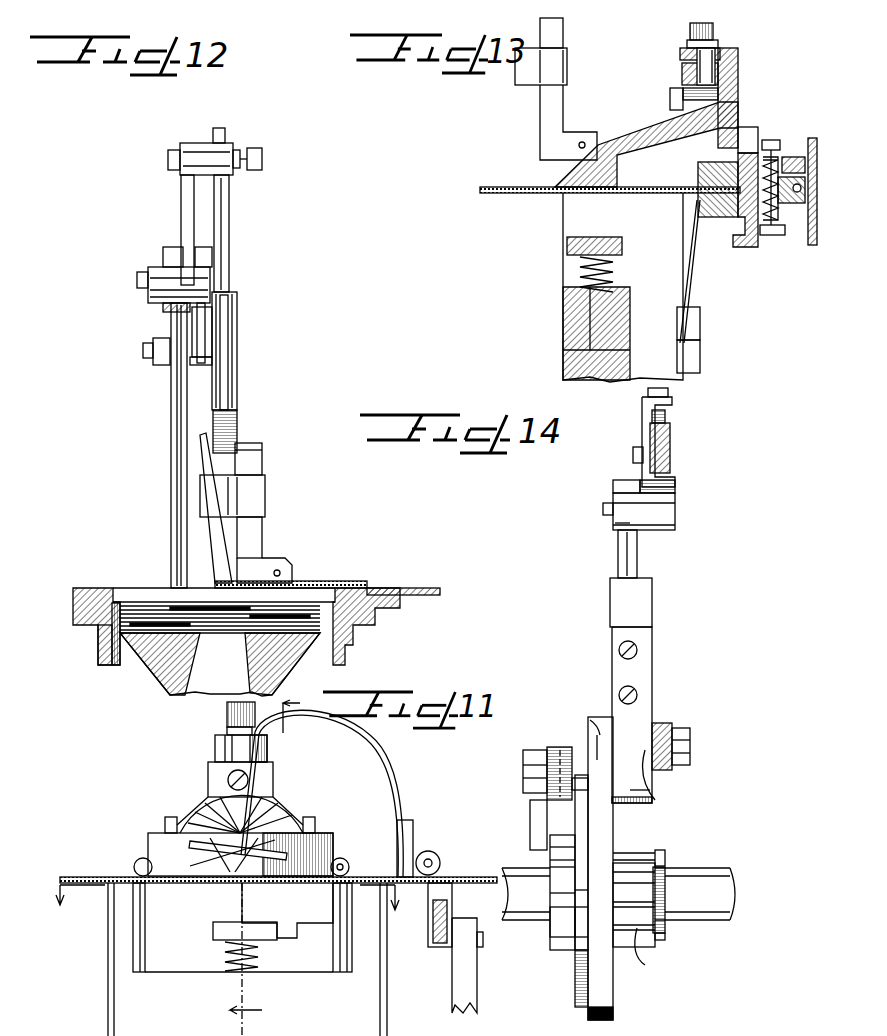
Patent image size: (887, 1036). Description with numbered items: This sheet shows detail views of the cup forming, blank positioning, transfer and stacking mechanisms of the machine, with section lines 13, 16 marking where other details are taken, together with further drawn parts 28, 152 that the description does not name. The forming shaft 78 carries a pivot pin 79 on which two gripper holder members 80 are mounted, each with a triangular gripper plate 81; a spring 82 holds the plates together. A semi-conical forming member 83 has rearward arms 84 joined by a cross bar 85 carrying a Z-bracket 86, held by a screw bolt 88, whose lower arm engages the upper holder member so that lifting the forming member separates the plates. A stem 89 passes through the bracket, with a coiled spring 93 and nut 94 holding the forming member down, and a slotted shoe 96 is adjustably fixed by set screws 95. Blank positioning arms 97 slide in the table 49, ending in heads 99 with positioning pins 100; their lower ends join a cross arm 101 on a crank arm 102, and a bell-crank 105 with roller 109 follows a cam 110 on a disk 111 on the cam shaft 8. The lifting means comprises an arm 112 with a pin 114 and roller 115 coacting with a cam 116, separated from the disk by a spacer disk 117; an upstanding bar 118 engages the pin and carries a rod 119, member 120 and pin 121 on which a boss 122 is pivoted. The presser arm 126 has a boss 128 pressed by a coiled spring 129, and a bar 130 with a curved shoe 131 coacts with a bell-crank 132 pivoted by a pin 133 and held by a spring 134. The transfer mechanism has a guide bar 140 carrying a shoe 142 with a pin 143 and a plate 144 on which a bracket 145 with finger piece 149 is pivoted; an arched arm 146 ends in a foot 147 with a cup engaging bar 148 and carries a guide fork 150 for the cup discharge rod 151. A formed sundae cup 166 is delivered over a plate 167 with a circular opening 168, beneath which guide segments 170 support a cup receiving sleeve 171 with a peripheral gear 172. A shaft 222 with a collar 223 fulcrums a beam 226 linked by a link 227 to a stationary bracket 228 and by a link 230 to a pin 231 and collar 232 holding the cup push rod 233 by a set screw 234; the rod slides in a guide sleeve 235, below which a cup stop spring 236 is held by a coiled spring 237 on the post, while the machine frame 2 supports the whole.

In FIG. 13, the machine frame 2 is at (568, 222).
In FIG. 11, the machine frame 2 is at (160, 1012).
In FIG. 14, the cam shaft 8 is at (732, 893).
In FIG. 11, the section line 13— 13 is at (278, 863).
In FIG. 11, the section line 16— 16 is at (226, 904).
In FIG. 13, the plunger block 28 is at (570, 248).
In FIG. 12, the table 49 is at (420, 588).
In FIG. 13, the table 49 is at (490, 187).
In FIG. 11, the table 49 is at (85, 877).
In FIG. 13, the forming shaft 78 is at (745, 233).
In FIG. 13, the pivot pin 79 is at (808, 240).
In FIG. 13, the gripper holder members 80 is at (790, 150).
In FIG. 13, the gripper plates 81 is at (672, 185).
In FIG. 13, the spring 82 is at (790, 225).
In FIG. 13, the forming member 83 is at (628, 140).
In FIG. 11, the forming member 83 is at (205, 808).
In FIG. 13, the arms 84 is at (685, 75).
In FIG. 14, the arms 84 is at (670, 438).
In FIG. 11, the arms 84 is at (165, 825).
In FIG. 11, the cross bar 85 is at (268, 800).
In FIG. 13, the Z-bracket 86 is at (728, 115).
In FIG. 11, the Z-bracket 86 is at (217, 748).
In FIG. 13, the screw bolt 88 is at (670, 95).
In FIG. 11, the screw bolt 88 is at (225, 780).
In FIG. 13, the stem 89 is at (690, 58).
In FIG. 13, the coiled spring 93 is at (688, 30).
In FIG. 11, the coiled spring 93 is at (227, 707).
In FIG. 13, the nut 94 is at (720, 45).
In FIG. 14, the nut 94 is at (668, 392).
In FIG. 11, the nut 94 is at (227, 730).
In FIG. 14, the set screws 95 is at (633, 455).
In FIG. 14, the slotted shoe 96 is at (644, 420).
In FIG. 13, the arms 97 is at (690, 238).
In FIG. 11, the arms 97 is at (145, 957).
In FIG. 11, the heads 99 is at (148, 850).
In FIG. 11, the positioning pins 100 is at (134, 866).
In FIG. 13, the cross arm 101 is at (700, 322).
In FIG. 13, the crank arm 102 is at (700, 352).
In FIG. 14, the bell-crank 105 is at (530, 825).
In FIG. 14, the roller 109 is at (558, 748).
In FIG. 14, the cam 110 is at (568, 893).
In FIG. 14, the disk 111 is at (560, 935).
In FIG. 14, the arm 112 is at (665, 720).
In FIG. 14, the pin 114 is at (670, 775).
In FIG. 14, the roller 115 is at (600, 720).
In FIG. 14, the cam 116 is at (597, 855).
In FIG. 14, the spacer disk 117 is at (578, 965).
In FIG. 14, the upstanding bar 118 is at (633, 598).
In FIG. 14, the rod 119 is at (620, 560).
In FIG. 14, the member 120 is at (618, 520).
In FIG. 14, the pin 121 is at (603, 510).
In FIG. 14, the boss 122 is at (677, 518).
In FIG. 11, the presser arm 126 is at (287, 910).
In FIG. 11, the boss 128 is at (222, 922).
In FIG. 13, the coiled spring 129 is at (580, 275).
In FIG. 11, the coiled spring 129 is at (230, 962).
In FIG. 14, the bar 130 is at (635, 675).
In FIG. 14, the curved shoe 131 is at (652, 800).
In FIG. 14, the bell-crank 132 is at (645, 917).
In FIG. 14, the pin 133 is at (665, 925).
In FIG. 14, the spring 134 is at (665, 865).
In FIG. 11, the guide bar 140 is at (440, 940).
In FIG. 11, the shoe 142 is at (447, 888).
In FIG. 11, the pin 143 is at (480, 948).
In FIG. 11, the plate 144 is at (428, 935).
In FIG. 11, the bracket 145 is at (425, 855).
In FIG. 12, the arched arm 146 is at (250, 463).
In FIG. 13, the arched arm 146 is at (545, 105).
In FIG. 11, the arched arm 146 is at (398, 790).
In FIG. 12, the foot 147 is at (264, 570).
In FIG. 13, the foot 147 is at (555, 148).
In FIG. 12, the cup engaging bar 148 is at (285, 573).
In FIG. 13, the cup engaging bar 148 is at (584, 141).
In FIG. 11, the cup engaging bar 148 is at (176, 894).
In FIG. 11, the finger piece 149 is at (410, 830).
In FIG. 12, the guide fork 150 is at (230, 496).
In FIG. 13, the guide fork 150 is at (525, 72).
In FIG. 11, the guide fork 150 is at (248, 775).
In FIG. 12, the cup discharge rod 151 is at (223, 283).
In FIG. 11, the tip 152 is at (455, 1000).
In FIG. 12, the sundae cup 166 is at (372, 588).
In FIG. 12, the plate 167 is at (90, 588).
In FIG. 12, the circular opening 168 is at (125, 595).
In FIG. 12, the guide segments 170 is at (370, 622).
In FIG. 12, the cup receiving sleeve 171 is at (112, 660).
In FIG. 12, the peripheral gear 172 is at (98, 640).
In FIG. 12, the shaft 222 is at (180, 419).
In FIG. 12, the collar 223 is at (175, 312).
In FIG. 12, the beam 226 is at (205, 260).
In FIG. 12, the link 227 is at (205, 322).
In FIG. 12, the stationary bracket 228 is at (238, 373).
In FIG. 12, the link 230 is at (187, 224).
In FIG. 12, the pin 231 is at (176, 168).
In FIG. 12, the collar 232 is at (233, 146).
In FIG. 12, the cup push rod 233 is at (228, 208).
In FIG. 12, the set screw 234 is at (263, 160).
In FIG. 12, the guide sleeve 235 is at (226, 392).
In FIG. 12, the cup stop spring 236 is at (206, 504).
In FIG. 12, the coiled spring 237 is at (238, 428).